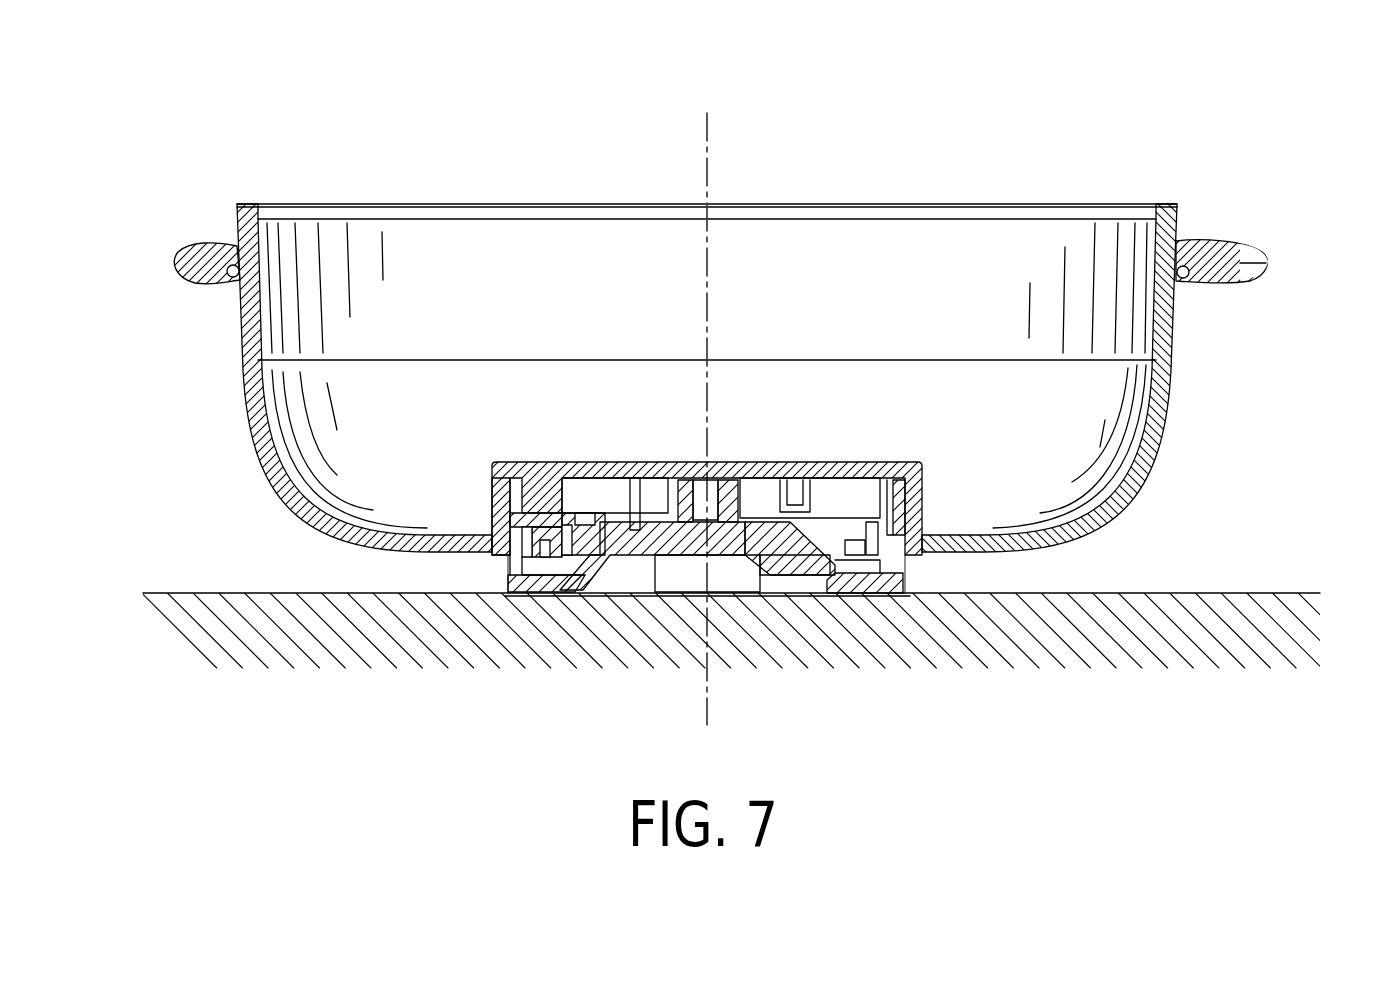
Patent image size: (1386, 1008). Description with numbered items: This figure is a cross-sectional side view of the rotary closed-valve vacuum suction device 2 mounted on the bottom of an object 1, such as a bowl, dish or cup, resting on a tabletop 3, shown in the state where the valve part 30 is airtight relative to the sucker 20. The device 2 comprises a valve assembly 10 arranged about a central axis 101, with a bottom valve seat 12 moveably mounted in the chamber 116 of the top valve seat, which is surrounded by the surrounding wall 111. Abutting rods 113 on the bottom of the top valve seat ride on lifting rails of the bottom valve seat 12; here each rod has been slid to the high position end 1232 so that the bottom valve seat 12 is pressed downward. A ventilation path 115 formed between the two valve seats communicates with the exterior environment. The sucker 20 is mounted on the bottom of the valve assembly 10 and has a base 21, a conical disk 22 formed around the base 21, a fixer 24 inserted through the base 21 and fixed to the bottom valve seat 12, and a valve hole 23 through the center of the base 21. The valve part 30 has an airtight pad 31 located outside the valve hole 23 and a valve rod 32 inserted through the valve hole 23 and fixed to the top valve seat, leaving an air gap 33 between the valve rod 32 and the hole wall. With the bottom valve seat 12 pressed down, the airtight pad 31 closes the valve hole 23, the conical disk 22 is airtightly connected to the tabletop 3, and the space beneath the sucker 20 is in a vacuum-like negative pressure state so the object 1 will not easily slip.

The object 1 is at (1198, 210).
The rotary closed-valve vacuum suction device 2 is at (918, 584).
The tabletop 3 is at (1183, 592).
The valve assembly 10 is at (914, 442).
The bottom valve seat 12 is at (609, 500).
The sucker 20 is at (565, 606).
The base 21 is at (635, 530).
The conical disk 22 is at (531, 593).
The valve hole 23 is at (710, 500).
The fixer 24 is at (790, 578).
The valve part 30 is at (721, 570).
The airtight pad 31 is at (673, 548).
The valve rod 32 is at (686, 500).
The air gap 33 is at (740, 520).
The central axis 101 is at (709, 135).
The surrounding wall 111 is at (494, 503).
The abutting rods 113 is at (554, 500).
The ventilation path 115 is at (830, 494).
The chamber 116 is at (900, 498).
The high position end 1232 is at (541, 505).